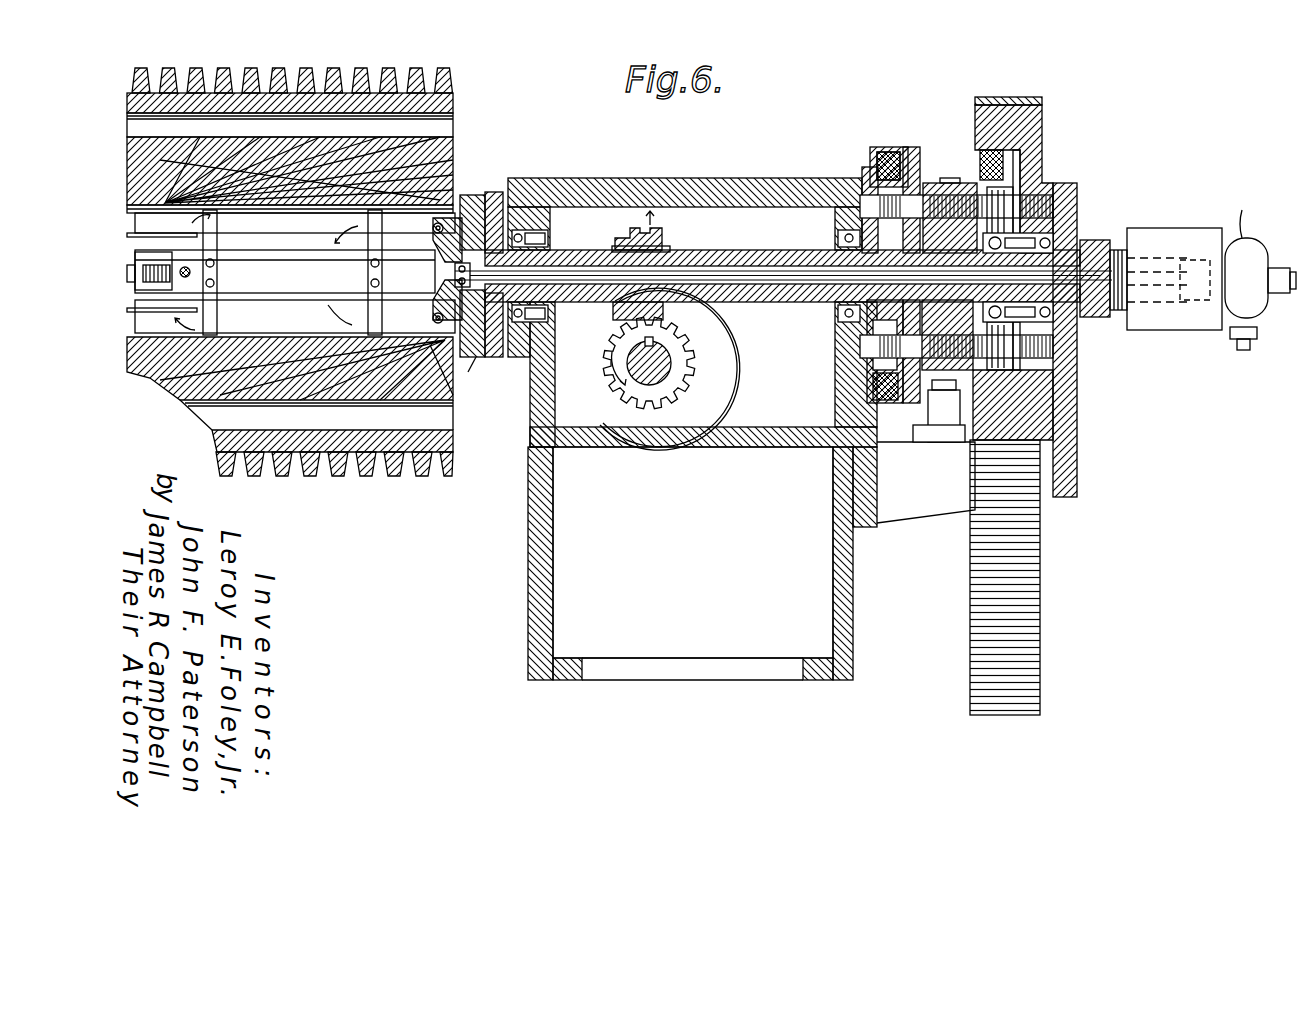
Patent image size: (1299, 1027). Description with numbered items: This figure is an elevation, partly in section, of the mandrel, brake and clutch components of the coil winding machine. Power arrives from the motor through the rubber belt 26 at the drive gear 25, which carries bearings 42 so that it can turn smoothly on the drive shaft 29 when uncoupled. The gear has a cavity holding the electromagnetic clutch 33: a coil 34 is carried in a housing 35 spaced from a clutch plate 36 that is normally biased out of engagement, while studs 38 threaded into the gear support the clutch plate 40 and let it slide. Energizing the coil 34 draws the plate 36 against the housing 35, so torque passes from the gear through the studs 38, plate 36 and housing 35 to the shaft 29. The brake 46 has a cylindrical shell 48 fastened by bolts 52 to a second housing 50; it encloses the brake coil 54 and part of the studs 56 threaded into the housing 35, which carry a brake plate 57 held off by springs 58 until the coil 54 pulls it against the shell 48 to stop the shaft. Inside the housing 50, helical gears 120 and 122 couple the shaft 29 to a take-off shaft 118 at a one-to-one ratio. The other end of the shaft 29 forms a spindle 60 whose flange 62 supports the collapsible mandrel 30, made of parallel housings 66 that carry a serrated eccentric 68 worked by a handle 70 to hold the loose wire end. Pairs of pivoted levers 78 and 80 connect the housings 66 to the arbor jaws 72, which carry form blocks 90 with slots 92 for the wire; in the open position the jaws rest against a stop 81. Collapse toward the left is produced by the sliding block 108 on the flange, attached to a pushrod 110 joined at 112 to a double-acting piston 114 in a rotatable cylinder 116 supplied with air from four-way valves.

The drive gear 25 is at (1042, 118).
The rubber belt 26 is at (1015, 97).
The drive shaft 29 is at (800, 250).
The mandrel 30 is at (230, 68).
The clutch 33 is at (968, 157).
The coil 34 is at (986, 150).
The housing 35 is at (940, 174).
The clutch plate 36 is at (1020, 160).
The studs 38 is at (1010, 238).
The clutch plate 40 is at (1000, 205).
The bearings 42 is at (1050, 245).
The brake 46 is at (863, 155).
The cylindrical shell 48 is at (880, 150).
The second housing 50 is at (780, 178).
The bolts 52 is at (865, 187).
The brake coil 54 is at (895, 152).
The studs 56 is at (912, 195).
The brake plate 57 is at (913, 408).
The springs 58 is at (890, 338).
The spindle 60 is at (496, 192).
The flange 62 is at (470, 195).
The parallel housings 66 is at (284, 277).
The serrated eccentric 68 is at (162, 266).
The handle 70 is at (162, 272).
The arbor jaws 72 is at (302, 228).
The levers 78 is at (218, 260).
The levers 80 is at (436, 234).
The stop 81 is at (473, 374).
The form blocks 90 is at (455, 100).
The slots 92 is at (402, 80).
The sliding block 108 is at (455, 275).
The pushrod 110 is at (592, 270).
The connection 112 is at (1098, 250).
The double-acting piston 114 is at (1183, 262).
The rotatable cylinder 116 is at (1150, 234).
The take-off shaft 118 is at (662, 360).
The helical gear 120 is at (658, 231).
The helical gear 122 is at (680, 342).